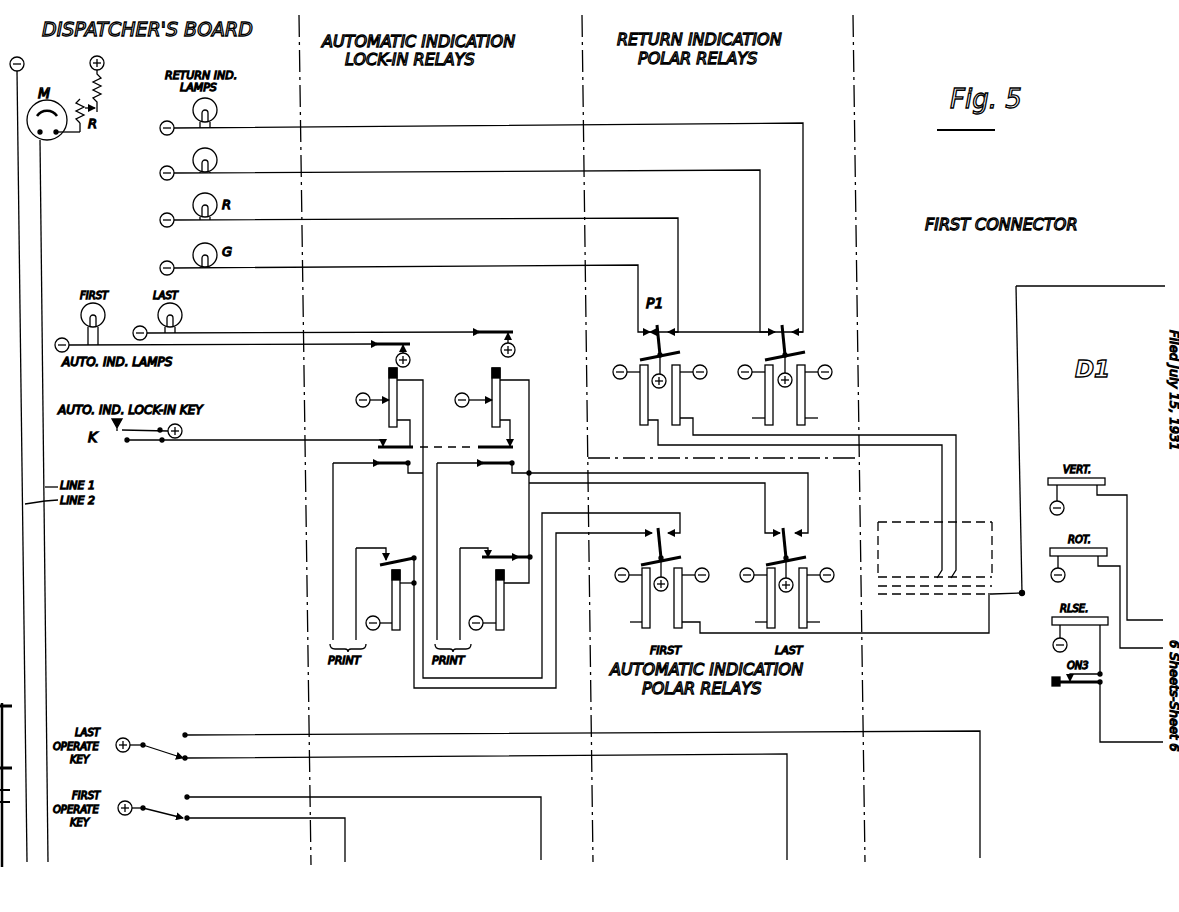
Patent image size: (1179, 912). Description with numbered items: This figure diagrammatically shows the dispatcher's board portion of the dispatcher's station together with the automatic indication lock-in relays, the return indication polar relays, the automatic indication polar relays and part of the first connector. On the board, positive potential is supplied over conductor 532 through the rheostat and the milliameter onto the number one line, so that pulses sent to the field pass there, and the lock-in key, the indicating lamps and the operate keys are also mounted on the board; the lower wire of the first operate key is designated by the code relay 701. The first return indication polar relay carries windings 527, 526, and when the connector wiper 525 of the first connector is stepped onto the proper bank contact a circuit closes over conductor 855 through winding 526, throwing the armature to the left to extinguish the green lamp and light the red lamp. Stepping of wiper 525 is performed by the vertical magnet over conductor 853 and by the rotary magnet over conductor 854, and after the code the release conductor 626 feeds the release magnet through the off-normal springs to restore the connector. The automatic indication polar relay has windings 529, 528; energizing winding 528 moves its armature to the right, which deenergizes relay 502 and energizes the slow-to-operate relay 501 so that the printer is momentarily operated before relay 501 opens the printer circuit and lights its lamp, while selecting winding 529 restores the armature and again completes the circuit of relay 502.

The conductor 532 is at (101, 70).
The slow-to-operate relay 501 is at (389, 386).
The relay 502 is at (392, 591).
The return indication polar relay winding 527 is at (640, 399).
The return-indication polar relay winding 526 is at (680, 397).
The automatic indication polar relay winding 529 is at (642, 600).
The automatic indication polar relay winding 528 is at (682, 599).
The wiper 525 is at (1007, 594).
The conductor 855 is at (1142, 285).
The conductor 854 is at (1162, 615).
The conductor 853 is at (1160, 643).
The release conductor 626 is at (1162, 736).
The relay 701 is at (363, 818).